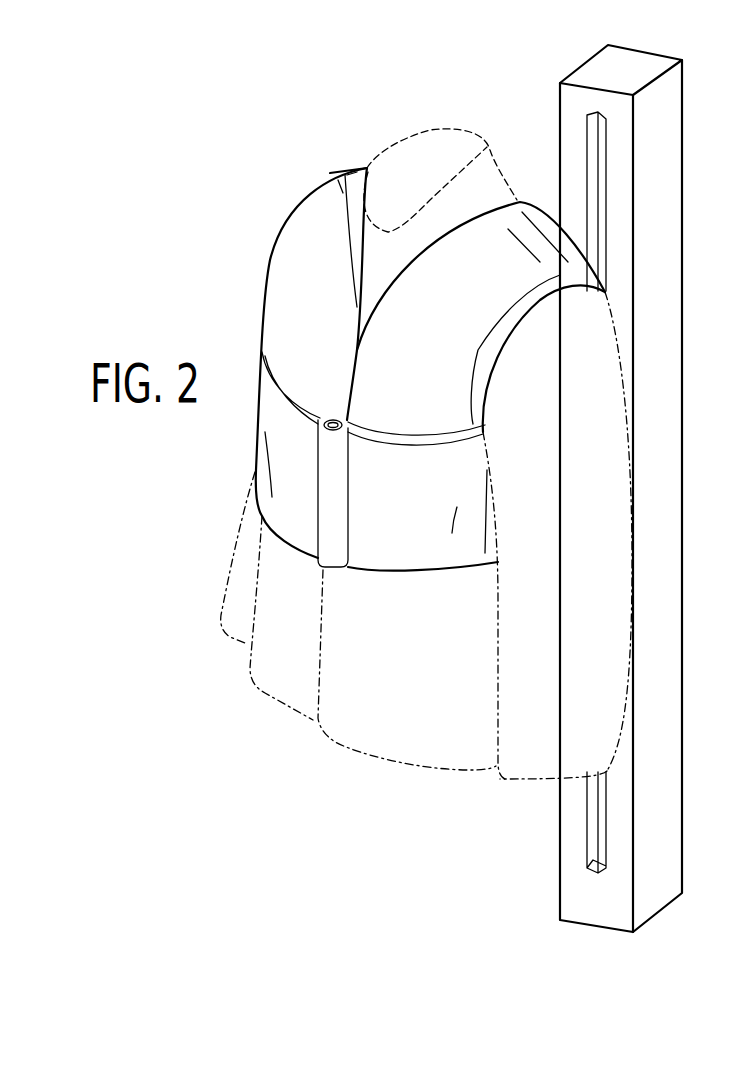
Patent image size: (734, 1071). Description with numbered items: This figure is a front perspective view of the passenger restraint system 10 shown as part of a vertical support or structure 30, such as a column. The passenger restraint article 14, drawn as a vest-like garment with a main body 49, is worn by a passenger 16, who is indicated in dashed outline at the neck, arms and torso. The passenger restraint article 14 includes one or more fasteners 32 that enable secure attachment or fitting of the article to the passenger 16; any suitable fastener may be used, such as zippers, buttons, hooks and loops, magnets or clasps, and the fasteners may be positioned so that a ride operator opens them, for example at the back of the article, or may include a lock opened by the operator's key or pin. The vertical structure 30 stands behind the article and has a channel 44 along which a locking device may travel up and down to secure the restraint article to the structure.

The passenger restraint system 10 is at (283, 116).
The passenger restraint article 14 is at (307, 240).
The passenger 16 is at (422, 162).
The vertical support or structure 30 is at (562, 130).
The fastener 32 is at (402, 548).
The channel 44 is at (601, 812).
The main body 49 is at (295, 308).